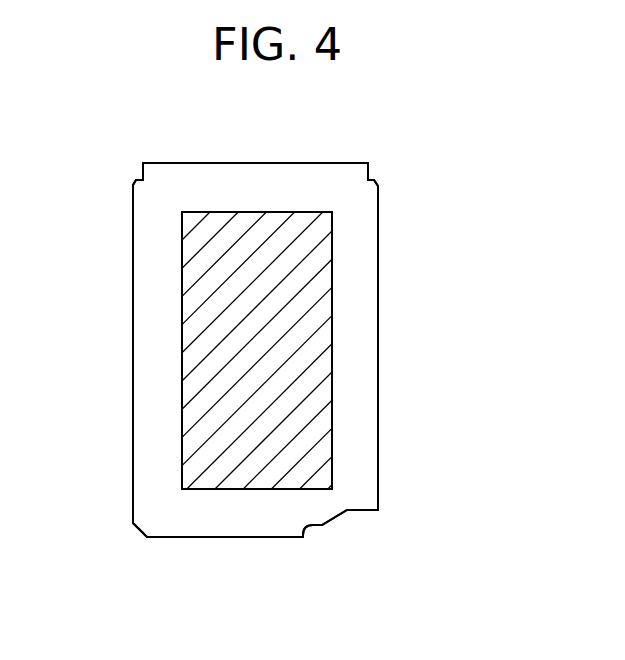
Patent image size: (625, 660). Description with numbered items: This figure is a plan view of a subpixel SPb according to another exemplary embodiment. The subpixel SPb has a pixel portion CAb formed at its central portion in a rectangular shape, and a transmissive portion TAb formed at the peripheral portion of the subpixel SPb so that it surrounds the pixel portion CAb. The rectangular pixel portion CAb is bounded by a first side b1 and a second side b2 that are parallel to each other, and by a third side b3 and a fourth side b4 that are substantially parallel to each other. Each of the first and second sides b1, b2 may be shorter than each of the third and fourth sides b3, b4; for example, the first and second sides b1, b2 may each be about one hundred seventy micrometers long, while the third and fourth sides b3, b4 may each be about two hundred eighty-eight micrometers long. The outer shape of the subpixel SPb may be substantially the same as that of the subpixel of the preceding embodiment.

The subpixel SPb is at (129, 149).
The transmissive portion TAb is at (155, 383).
The pixel portion CAb is at (200, 327).
The first side b1 is at (270, 212).
The second side b2 is at (243, 489).
The third side b3 is at (182, 425).
The fourth side b4 is at (332, 338).